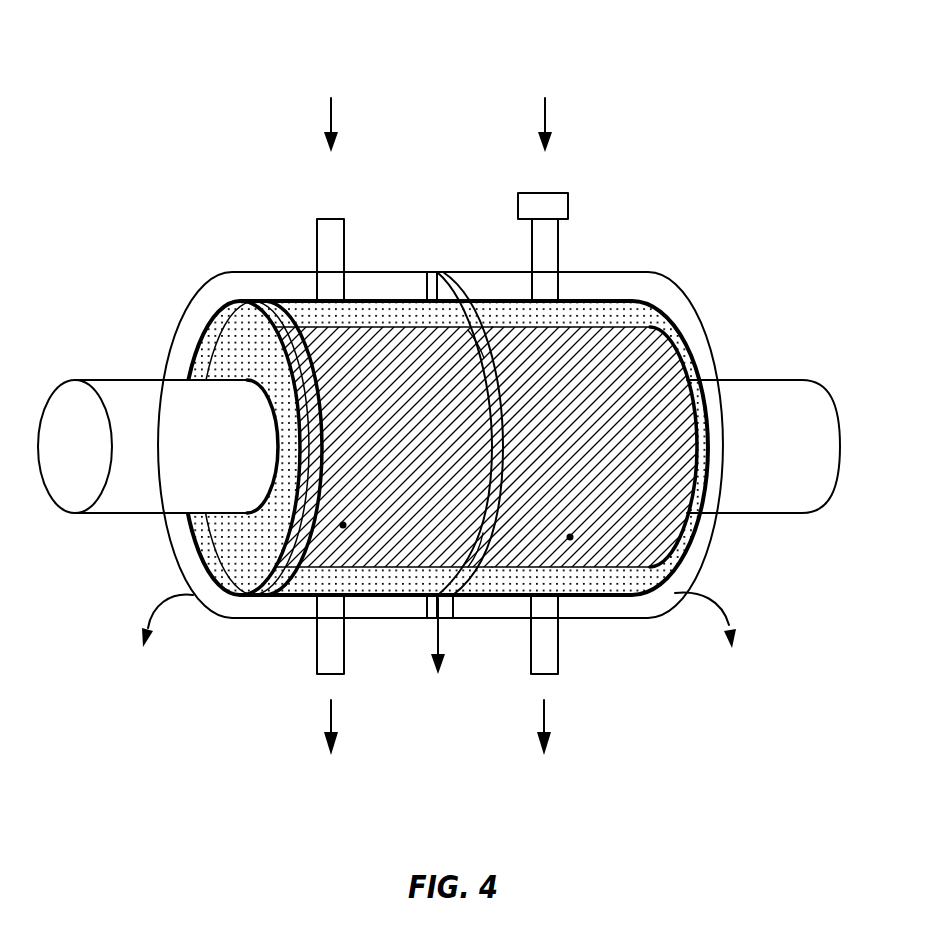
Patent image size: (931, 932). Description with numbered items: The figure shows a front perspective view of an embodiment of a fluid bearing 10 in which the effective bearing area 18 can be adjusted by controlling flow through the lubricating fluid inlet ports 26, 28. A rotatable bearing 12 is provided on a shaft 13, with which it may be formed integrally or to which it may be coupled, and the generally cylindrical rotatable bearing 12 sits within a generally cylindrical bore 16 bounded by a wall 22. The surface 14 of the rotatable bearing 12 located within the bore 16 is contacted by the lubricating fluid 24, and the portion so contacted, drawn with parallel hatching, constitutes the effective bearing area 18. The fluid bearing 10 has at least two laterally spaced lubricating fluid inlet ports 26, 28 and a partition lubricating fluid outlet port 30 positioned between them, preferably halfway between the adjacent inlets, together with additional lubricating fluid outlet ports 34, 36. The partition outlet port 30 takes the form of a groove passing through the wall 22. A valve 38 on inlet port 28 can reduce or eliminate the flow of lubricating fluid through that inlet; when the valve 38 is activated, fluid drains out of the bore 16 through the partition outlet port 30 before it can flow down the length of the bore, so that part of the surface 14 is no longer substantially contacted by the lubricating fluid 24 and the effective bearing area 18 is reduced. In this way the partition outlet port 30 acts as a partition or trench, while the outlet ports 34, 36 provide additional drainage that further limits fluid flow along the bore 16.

The fluid bearing 10 is at (234, 62).
The rotatable bearing 12 is at (653, 363).
The shaft 13 is at (128, 513).
The surface 14 is at (343, 525).
The bore 16 is at (226, 313).
The effective bearing area 18 is at (570, 537).
The wall 22 is at (503, 300).
The lubricating fluid 24 is at (573, 313).
The lubricating fluid inlet port 26 is at (317, 235).
The lubricating fluid inlet port 28 is at (560, 232).
The partition lubricating fluid outlet port 30 is at (453, 617).
The lubricating fluid outlet port 34 is at (317, 676).
The lubricating fluid outlet port 36 is at (558, 676).
The valve 38 is at (567, 192).